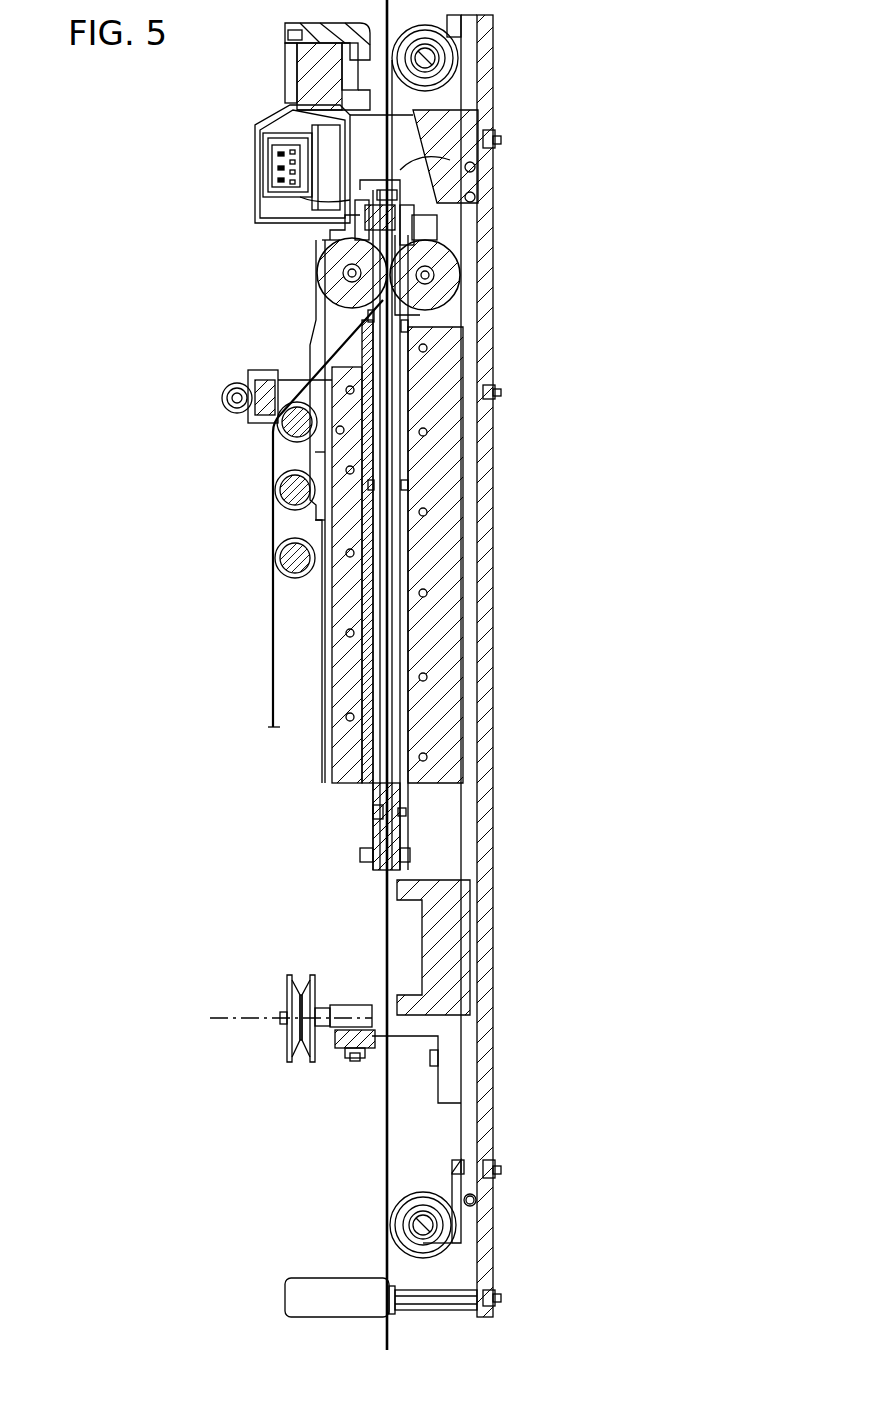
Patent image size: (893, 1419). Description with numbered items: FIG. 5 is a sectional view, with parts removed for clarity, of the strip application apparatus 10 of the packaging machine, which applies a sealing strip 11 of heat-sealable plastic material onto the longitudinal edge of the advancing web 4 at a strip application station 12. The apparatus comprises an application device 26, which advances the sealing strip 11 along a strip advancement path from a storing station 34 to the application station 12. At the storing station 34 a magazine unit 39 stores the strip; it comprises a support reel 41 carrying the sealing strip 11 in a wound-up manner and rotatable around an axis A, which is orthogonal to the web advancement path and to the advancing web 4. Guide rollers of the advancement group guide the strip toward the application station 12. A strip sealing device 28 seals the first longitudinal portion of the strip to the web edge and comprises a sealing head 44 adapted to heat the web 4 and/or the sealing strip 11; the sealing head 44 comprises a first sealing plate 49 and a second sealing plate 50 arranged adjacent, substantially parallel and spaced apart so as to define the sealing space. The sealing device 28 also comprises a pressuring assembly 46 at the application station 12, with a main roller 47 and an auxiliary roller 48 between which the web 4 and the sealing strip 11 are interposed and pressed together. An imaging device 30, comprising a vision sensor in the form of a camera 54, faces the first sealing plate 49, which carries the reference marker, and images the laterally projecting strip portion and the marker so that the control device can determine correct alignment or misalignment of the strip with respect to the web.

The web 4 is at (387, 1170).
The strip application apparatus 10 is at (178, 1007).
The sealing strip 11 is at (273, 680).
The strip application station 12 is at (420, 315).
The application device 26 is at (298, 720).
The strip sealing device 28 is at (348, 798).
The imaging device 30 is at (225, 135).
The storing station 34 is at (300, 1060).
The magazine unit 39 is at (277, 1010).
The support reel 41 is at (310, 985).
The sealing head 44 is at (415, 400).
The pressuring assembly 46 is at (272, 258).
The main roller 47 is at (325, 290).
The auxiliary roller 48 is at (460, 282).
The first sealing plate 49 is at (378, 870).
The second sealing plate 50 is at (398, 795).
The camera 54 is at (320, 197).
The axis A is at (215, 1022).